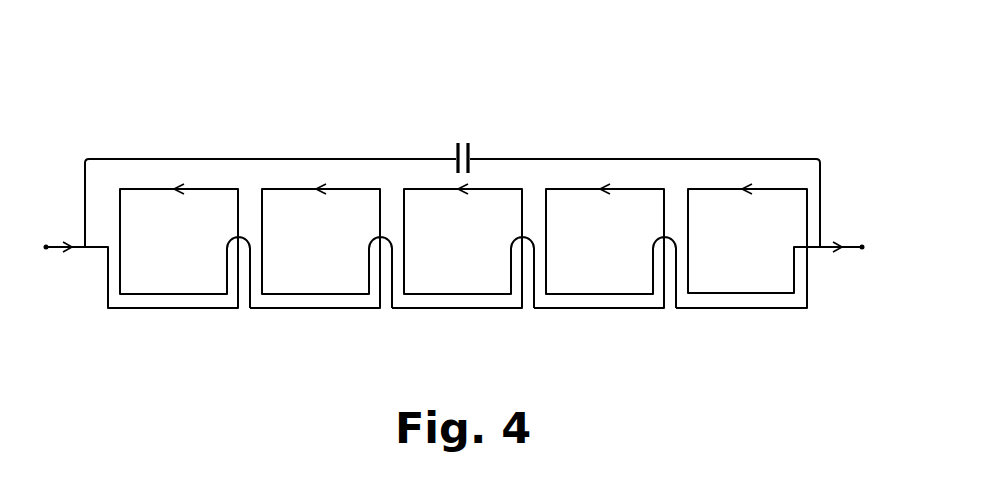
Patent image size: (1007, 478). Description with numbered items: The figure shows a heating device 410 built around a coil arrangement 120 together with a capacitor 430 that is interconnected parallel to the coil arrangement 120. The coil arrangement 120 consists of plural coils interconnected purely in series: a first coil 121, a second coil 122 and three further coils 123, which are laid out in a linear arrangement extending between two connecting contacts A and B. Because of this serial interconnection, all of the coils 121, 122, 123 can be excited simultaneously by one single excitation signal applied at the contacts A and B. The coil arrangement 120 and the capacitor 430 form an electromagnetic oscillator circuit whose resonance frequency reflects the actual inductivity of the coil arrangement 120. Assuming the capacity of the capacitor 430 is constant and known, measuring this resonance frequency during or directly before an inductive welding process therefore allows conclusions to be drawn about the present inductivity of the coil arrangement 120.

The heating device 410 is at (829, 85).
The coil arrangement 120 is at (843, 197).
The first coil 121 is at (158, 252).
The second coil 122 is at (300, 252).
The further coils 123 is at (442, 252).
The capacitor 430 is at (451, 143).